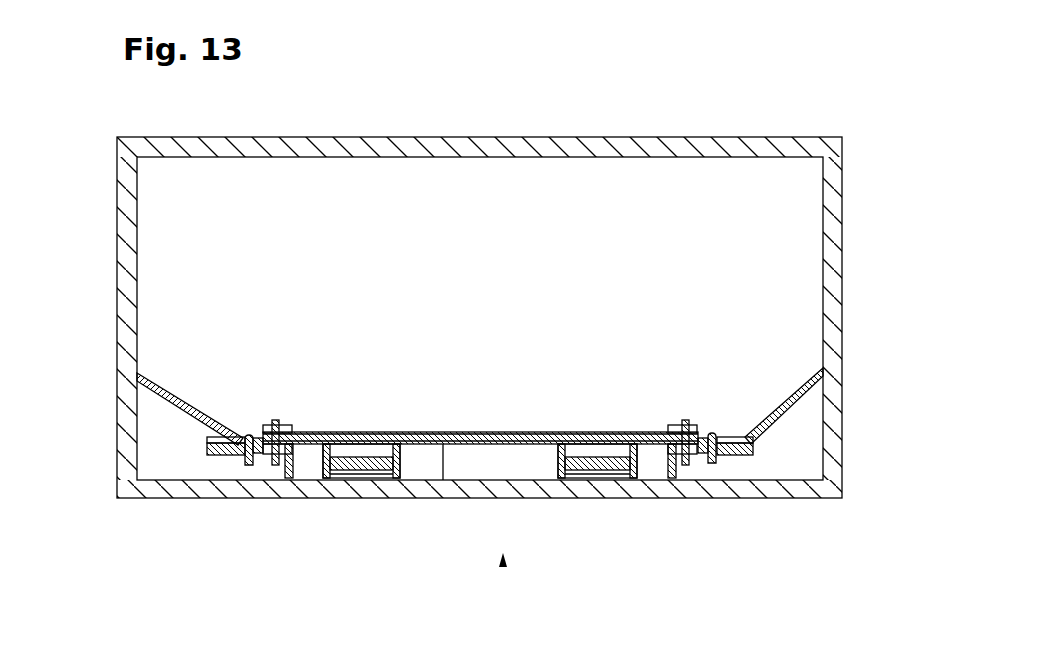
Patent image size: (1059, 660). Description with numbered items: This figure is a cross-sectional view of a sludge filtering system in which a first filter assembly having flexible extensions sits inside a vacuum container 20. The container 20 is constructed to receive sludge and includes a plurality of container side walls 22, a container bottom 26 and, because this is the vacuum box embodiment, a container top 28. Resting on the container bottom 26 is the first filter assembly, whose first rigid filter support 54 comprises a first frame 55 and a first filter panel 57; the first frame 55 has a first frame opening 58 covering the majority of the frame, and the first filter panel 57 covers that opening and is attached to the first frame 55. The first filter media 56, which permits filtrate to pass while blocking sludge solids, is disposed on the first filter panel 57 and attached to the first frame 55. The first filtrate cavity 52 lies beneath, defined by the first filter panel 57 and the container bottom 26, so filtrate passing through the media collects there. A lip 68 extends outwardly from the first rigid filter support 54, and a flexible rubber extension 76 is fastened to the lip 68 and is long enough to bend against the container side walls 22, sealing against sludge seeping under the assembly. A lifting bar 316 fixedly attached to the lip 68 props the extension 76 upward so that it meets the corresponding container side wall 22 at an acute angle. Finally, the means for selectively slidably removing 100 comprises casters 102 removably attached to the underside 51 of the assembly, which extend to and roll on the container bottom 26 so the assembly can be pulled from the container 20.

The container 20 is at (412, 118).
The container side walls 22 is at (137, 234).
The container bottom 26 is at (508, 490).
The container top 28 is at (578, 137).
The underside 51 is at (443, 480).
The first filtrate cavity 52 is at (490, 473).
The first rigid filter support 54 is at (308, 477).
The first frame 55 is at (249, 465).
The first filter media 56 is at (360, 431).
The first filter panel 57 is at (518, 458).
The first frame opening 58 is at (292, 456).
The lip 68 is at (220, 456).
The extension 76 is at (168, 393).
The means for selectively slidably removing 100 is at (503, 567).
The casters 102 is at (418, 478).
The lifting bar 316 is at (207, 444).